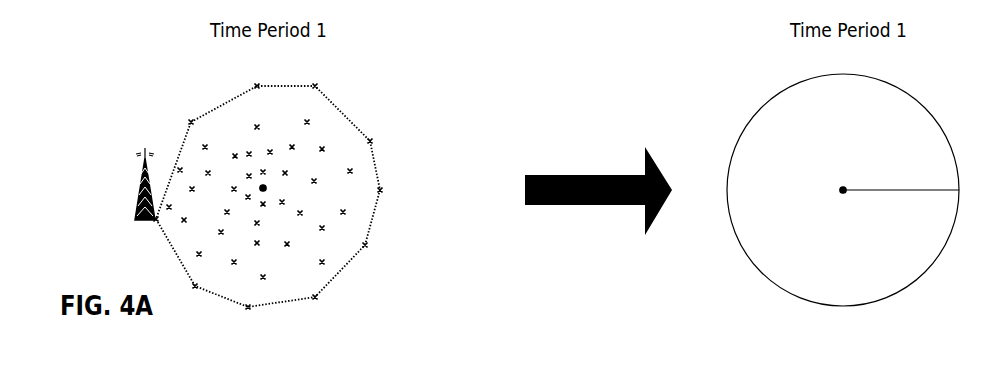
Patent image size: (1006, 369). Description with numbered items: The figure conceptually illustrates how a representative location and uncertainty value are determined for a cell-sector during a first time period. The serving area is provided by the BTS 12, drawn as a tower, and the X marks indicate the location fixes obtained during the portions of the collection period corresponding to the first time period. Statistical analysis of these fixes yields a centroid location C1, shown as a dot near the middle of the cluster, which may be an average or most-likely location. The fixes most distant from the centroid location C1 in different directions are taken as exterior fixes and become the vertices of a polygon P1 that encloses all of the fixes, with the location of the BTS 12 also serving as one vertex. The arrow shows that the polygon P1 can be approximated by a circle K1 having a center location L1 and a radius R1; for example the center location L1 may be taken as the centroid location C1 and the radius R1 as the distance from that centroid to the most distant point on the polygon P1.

The BTS 12 is at (135, 218).
The polygon P1 is at (342, 112).
The centroid location C1 is at (263, 188).
The circle K1 is at (772, 101).
The center location L1 is at (846, 179).
The radius R1 is at (901, 205).